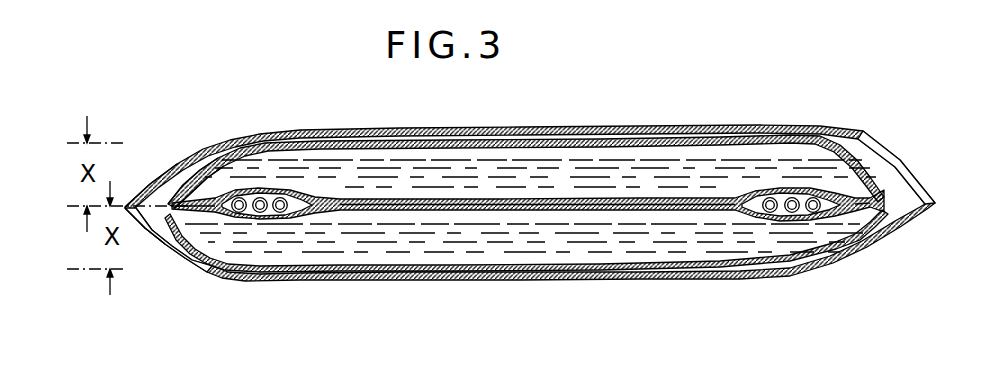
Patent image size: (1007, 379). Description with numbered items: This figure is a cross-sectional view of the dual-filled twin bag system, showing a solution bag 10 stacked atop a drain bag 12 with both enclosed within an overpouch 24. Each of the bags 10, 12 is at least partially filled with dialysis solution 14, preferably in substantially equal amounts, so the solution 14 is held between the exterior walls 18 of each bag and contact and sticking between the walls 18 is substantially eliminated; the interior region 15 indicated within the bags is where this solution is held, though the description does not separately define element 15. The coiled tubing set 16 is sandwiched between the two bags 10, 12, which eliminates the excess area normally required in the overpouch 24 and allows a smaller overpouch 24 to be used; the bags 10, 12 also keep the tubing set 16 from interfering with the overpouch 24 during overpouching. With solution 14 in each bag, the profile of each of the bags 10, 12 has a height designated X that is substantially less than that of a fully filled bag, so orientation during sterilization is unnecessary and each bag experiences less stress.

The solution bag 10 is at (190, 252).
The drain bag 12 is at (213, 158).
The dialysis solution 14 is at (765, 177).
The inner liner 15 is at (350, 155).
The coiled tubing set 16 is at (252, 214).
The exterior walls 18 is at (274, 131).
The overpouch 24 is at (157, 185).